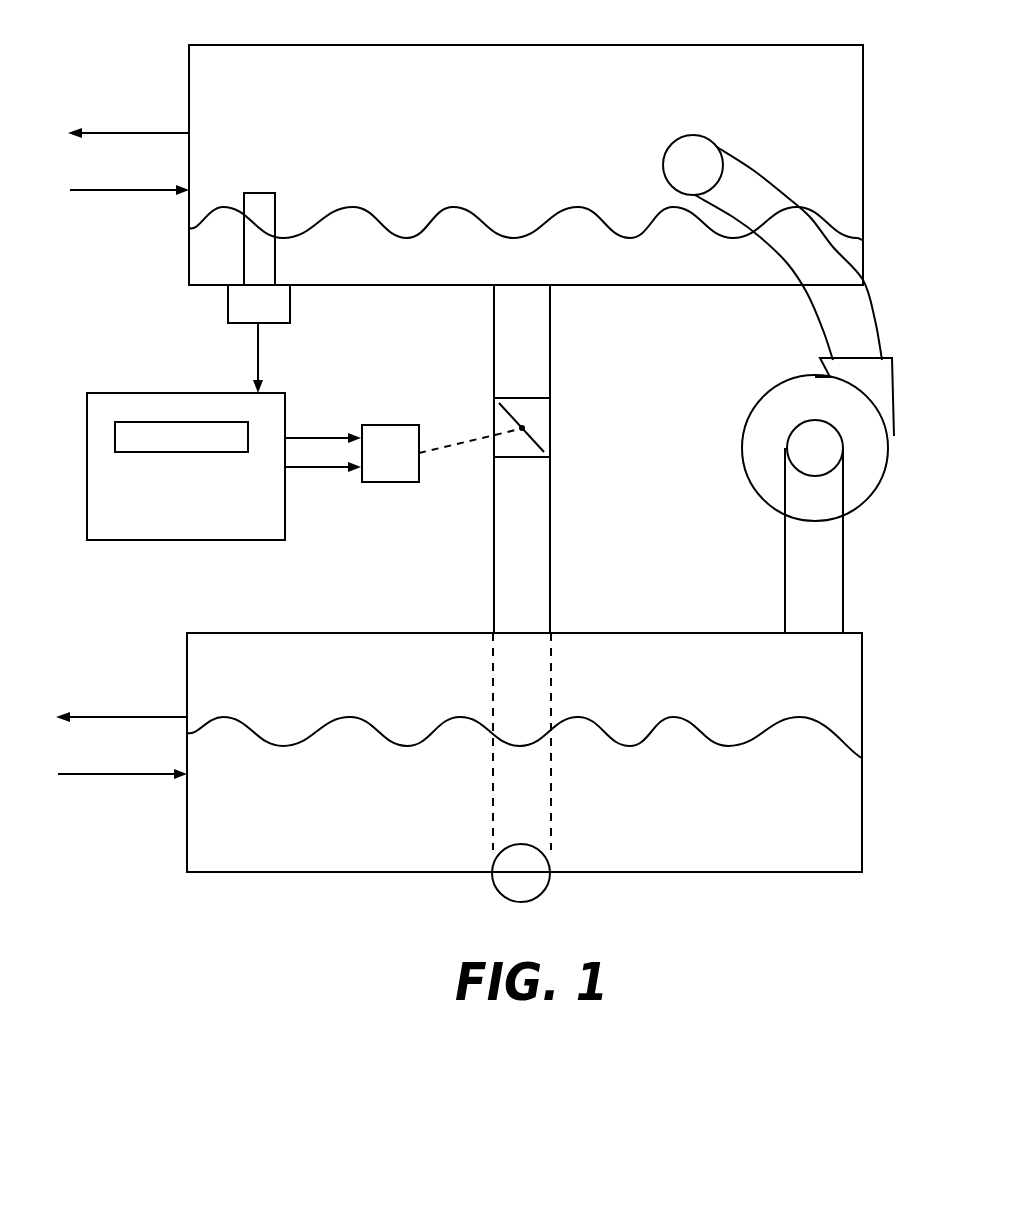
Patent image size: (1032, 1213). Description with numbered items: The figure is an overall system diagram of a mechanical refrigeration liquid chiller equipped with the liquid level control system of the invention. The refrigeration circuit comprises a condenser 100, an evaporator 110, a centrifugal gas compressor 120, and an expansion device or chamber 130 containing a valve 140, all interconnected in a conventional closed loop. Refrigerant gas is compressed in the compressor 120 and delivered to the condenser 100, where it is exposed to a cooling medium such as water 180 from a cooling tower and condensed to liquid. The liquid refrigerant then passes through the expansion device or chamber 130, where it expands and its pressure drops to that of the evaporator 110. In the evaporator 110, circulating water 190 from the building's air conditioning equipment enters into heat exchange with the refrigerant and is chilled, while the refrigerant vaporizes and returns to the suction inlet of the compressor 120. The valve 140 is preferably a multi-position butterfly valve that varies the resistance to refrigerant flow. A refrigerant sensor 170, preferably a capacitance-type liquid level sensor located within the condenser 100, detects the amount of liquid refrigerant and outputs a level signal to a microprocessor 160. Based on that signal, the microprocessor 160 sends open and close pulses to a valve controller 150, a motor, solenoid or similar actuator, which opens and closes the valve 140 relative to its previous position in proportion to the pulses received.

The condenser 100 is at (526, 151).
The evaporator 110 is at (524, 746).
The centrifugal gas compressor 120 is at (804, 384).
The expansion device or chamber 130 is at (549, 459).
The valve 140 is at (550, 427).
The valve controller 150 is at (441, 472).
The microprocessor 160 is at (213, 447).
The refrigerant sensor 170 is at (253, 293).
The water 180 is at (128, 161).
The circulating water 190 is at (121, 745).